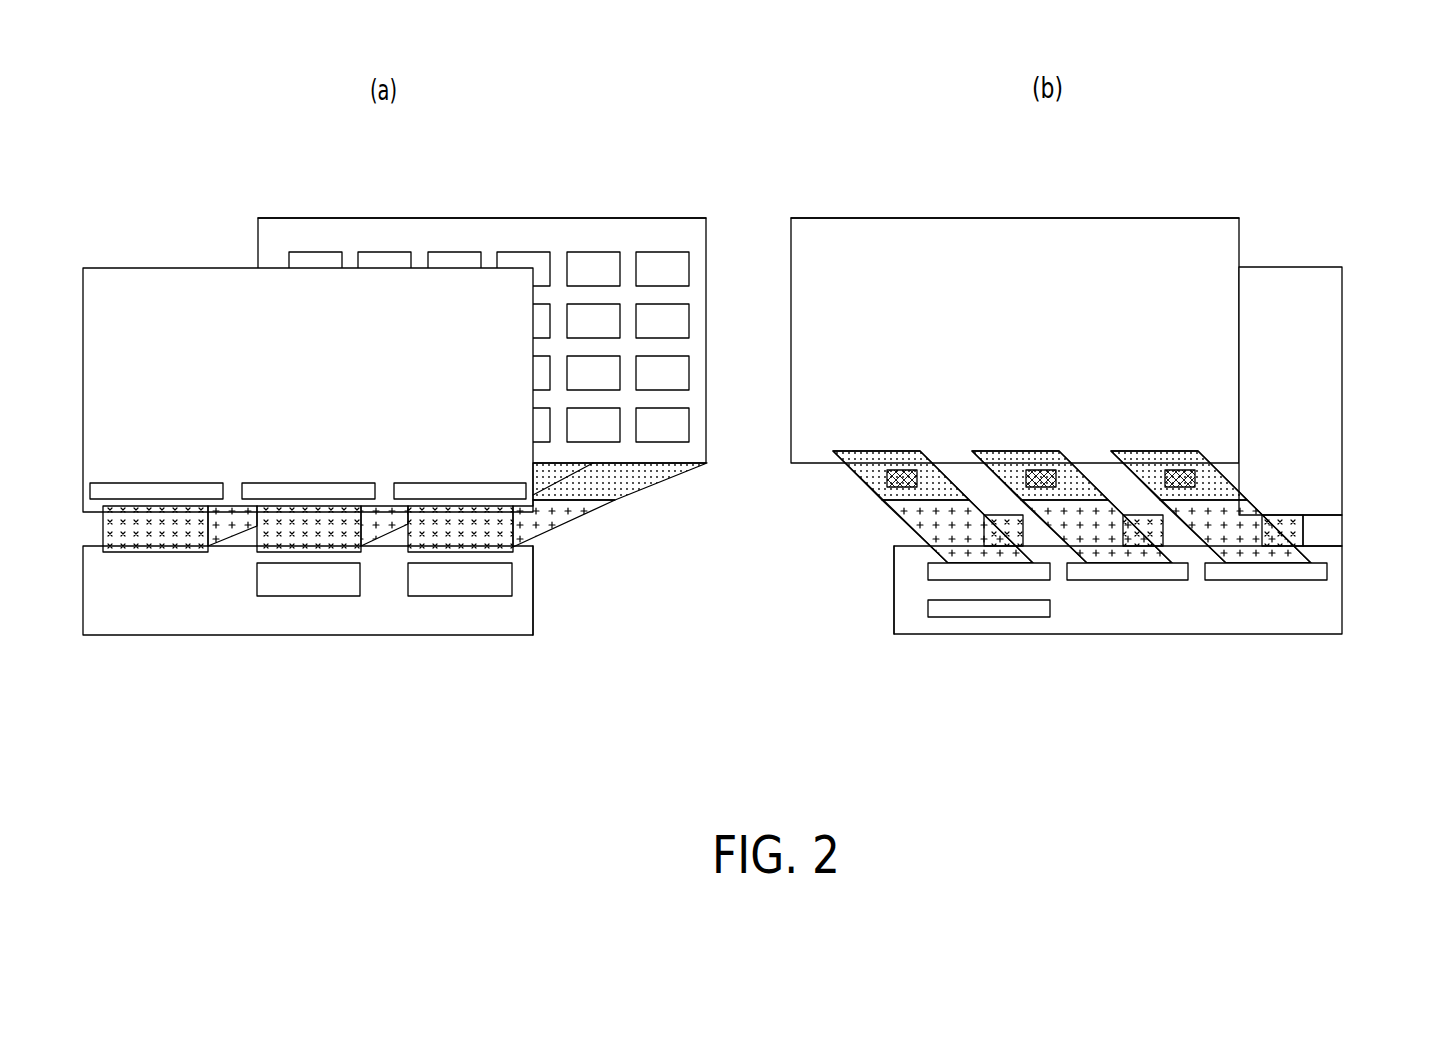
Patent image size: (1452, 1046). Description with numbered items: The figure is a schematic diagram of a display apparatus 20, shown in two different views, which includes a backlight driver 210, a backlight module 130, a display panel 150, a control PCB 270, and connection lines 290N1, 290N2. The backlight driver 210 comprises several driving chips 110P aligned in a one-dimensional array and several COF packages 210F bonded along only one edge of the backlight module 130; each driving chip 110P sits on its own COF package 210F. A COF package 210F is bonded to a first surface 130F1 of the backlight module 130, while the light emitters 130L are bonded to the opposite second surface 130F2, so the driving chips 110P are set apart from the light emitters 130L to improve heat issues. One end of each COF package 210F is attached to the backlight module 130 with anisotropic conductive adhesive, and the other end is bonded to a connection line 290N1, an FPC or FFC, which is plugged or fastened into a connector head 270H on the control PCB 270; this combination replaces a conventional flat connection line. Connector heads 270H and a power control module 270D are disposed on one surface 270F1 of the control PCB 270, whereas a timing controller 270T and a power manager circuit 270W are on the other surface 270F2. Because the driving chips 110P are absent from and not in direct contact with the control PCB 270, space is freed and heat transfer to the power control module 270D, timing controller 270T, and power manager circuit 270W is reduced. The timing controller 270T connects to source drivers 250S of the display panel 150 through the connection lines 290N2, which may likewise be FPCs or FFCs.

The display apparatus 20 is at (156, 122).
The backlight module 130 is at (867, 152).
The light emitters 130L is at (318, 258).
The first surface of the backlight module 130F1 is at (845, 228).
The second surface of the backlight module 130F2 is at (667, 228).
The display panel 150 is at (142, 282).
The source drivers 250S is at (153, 490).
The backlight driver 210 is at (1205, 392).
The COF package 210F is at (658, 476).
The driving chip 110P is at (903, 468).
The connection line 290N1 is at (550, 528).
The connection line 290N2 is at (154, 545).
The control PCB 270 is at (853, 712).
The surface of the control PCB 270F1 is at (905, 610).
The surface of the control PCB 270F2 is at (523, 609).
The timing controller 270T is at (271, 598).
The power manager circuit 270W is at (427, 598).
The connector heads 270H is at (933, 570).
The power control module 270D is at (947, 612).